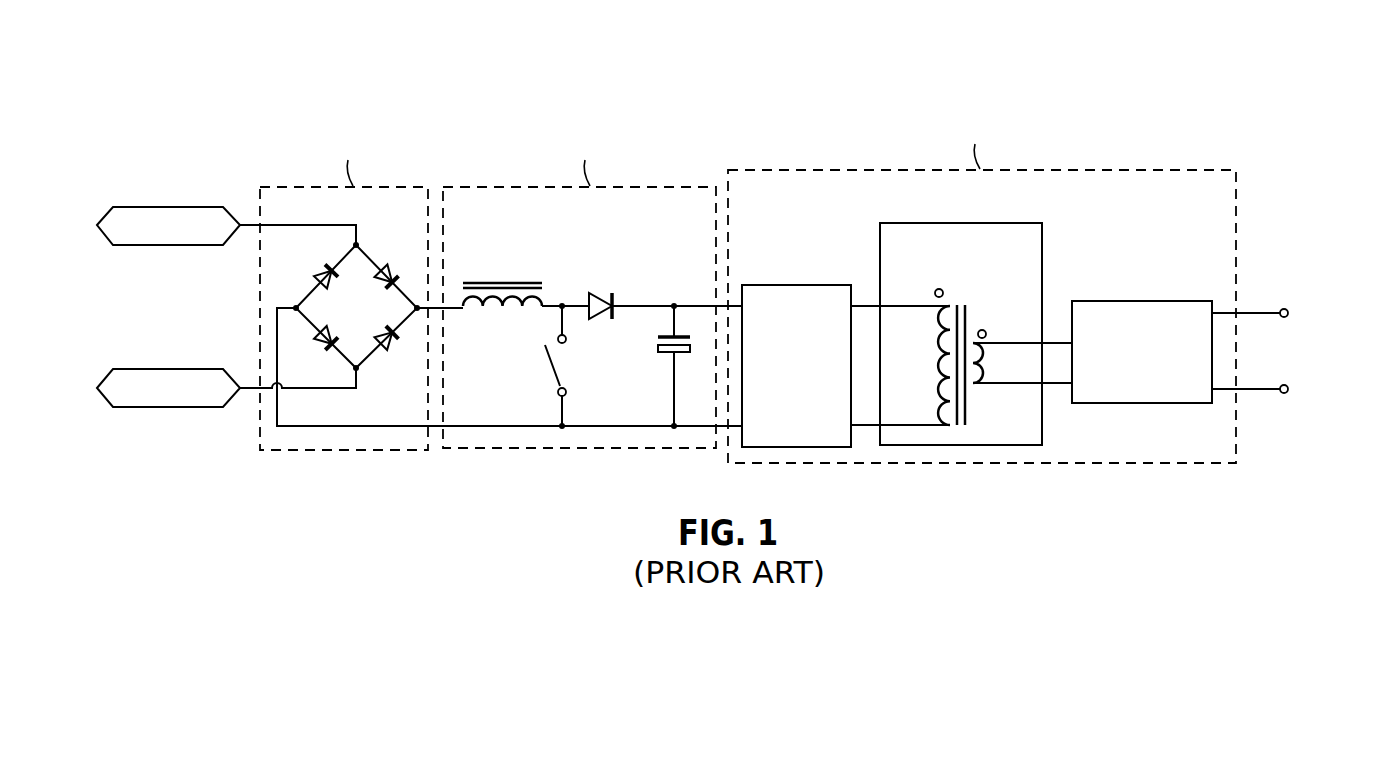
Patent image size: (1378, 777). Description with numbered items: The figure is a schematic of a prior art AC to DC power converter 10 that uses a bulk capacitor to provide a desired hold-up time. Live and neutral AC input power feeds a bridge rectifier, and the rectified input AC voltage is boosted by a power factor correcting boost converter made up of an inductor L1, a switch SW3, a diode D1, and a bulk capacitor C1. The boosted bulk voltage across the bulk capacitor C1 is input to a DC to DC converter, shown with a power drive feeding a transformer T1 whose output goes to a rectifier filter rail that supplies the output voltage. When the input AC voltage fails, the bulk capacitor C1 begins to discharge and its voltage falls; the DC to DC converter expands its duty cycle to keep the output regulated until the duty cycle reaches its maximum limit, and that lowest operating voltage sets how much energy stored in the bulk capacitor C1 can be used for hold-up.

The AC to DC power converter 10 is at (1242, 64).
The inductor L1 is at (502, 279).
The diode D1 is at (593, 292).
The boost switch SW3 is at (578, 366).
The bulk capacitor C1 is at (682, 366).
The transformer T1 is at (961, 334).